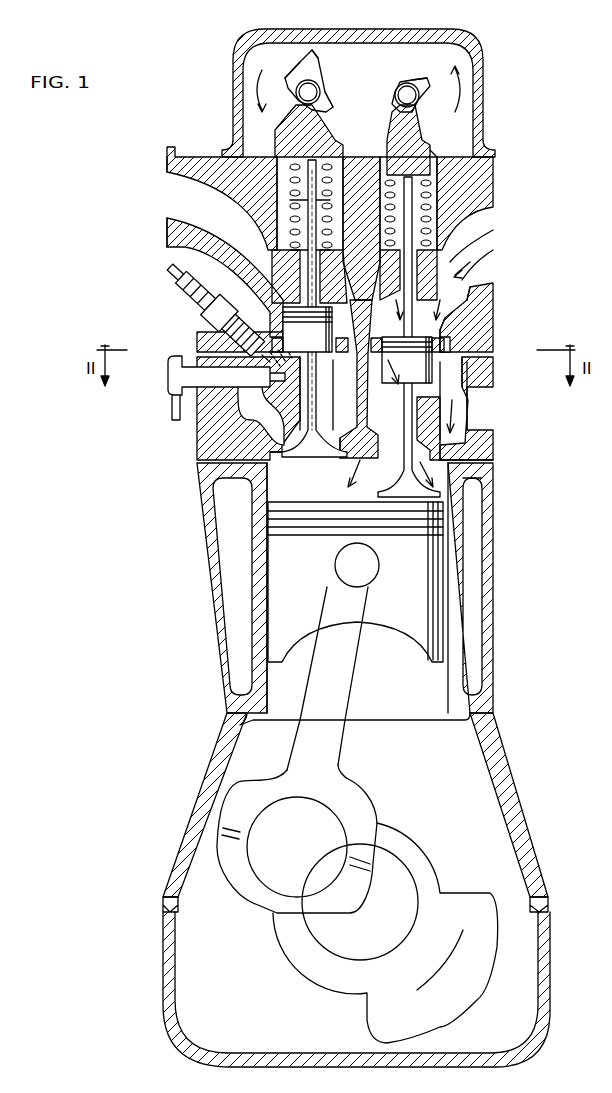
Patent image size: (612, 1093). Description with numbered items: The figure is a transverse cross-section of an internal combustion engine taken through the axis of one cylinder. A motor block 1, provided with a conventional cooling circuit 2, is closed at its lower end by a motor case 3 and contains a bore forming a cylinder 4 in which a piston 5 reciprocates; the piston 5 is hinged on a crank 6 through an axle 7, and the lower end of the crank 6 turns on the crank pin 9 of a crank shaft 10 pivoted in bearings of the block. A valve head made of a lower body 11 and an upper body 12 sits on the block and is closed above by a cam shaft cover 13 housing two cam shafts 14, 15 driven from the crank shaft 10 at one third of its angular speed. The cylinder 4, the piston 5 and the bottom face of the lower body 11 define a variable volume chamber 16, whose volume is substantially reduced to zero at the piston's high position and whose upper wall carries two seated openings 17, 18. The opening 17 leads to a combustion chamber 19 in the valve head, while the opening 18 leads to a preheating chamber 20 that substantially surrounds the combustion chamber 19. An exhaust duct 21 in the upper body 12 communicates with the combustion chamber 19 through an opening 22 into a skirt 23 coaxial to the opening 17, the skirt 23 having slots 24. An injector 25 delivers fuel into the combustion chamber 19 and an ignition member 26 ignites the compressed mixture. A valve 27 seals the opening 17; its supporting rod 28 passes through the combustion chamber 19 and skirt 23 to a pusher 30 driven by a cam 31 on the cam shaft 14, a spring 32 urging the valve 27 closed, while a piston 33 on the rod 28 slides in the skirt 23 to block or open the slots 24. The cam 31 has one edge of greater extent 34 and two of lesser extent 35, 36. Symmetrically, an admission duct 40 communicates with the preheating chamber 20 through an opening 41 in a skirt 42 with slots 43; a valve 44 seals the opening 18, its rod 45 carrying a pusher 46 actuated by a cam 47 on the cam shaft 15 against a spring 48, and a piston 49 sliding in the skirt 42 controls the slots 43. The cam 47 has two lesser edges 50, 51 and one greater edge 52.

The motor block 1 is at (496, 626).
The cooling circuit 2 is at (478, 550).
The motor case 3 is at (552, 990).
The cylinder 4 is at (396, 686).
The piston 5 is at (290, 580).
The crank 6 is at (327, 722).
The axle 7 is at (348, 556).
The crank pin 9 is at (266, 824).
The crank shaft 10 is at (410, 845).
The lower body of the valve head 11 is at (197, 436).
The upper body of the valve head 12 is at (495, 178).
The cam shaft cover 13 is at (480, 42).
The cam shaft 14 is at (313, 88).
The cam shaft 15 is at (406, 86).
The variable volume chamber 16 is at (324, 500).
The opening 17 is at (292, 455).
The opening 18 is at (470, 454).
The combustion chamber 19 is at (278, 410).
The preheating chamber 20 is at (445, 378).
The exhaust duct 21 is at (182, 182).
The opening 22 is at (284, 282).
The skirt 23 is at (304, 360).
The slots 24 is at (232, 283).
The injector 25 is at (190, 272).
The ignition member 26 is at (178, 374).
The valve 27 is at (318, 458).
The supporting rod 28 is at (316, 418).
The pusher 30 is at (297, 122).
The cam 31 is at (296, 78).
The spring 32 is at (243, 212).
The piston 33 is at (322, 364).
The lateral cam edge of greater extent 34 is at (312, 47).
The lateral cam edge of lesser extent 35 is at (286, 74).
The lateral cam edge of lesser extent 36 is at (332, 98).
The admission duct 40 is at (472, 222).
The opening 41 is at (472, 306).
The skirt 42 is at (452, 340).
The slots 43 is at (452, 322).
The valve 44 is at (462, 492).
The rod 45 is at (430, 432).
The pusher 46 is at (427, 160).
The cam 47 is at (395, 120).
The spring 48 is at (475, 238).
The piston 49 is at (470, 408).
The lateral cam edge of lesser extent 50 is at (386, 100).
The lateral cam edge of lesser extent 51 is at (422, 84).
The lateral cam edge of greater extent 52 is at (402, 138).